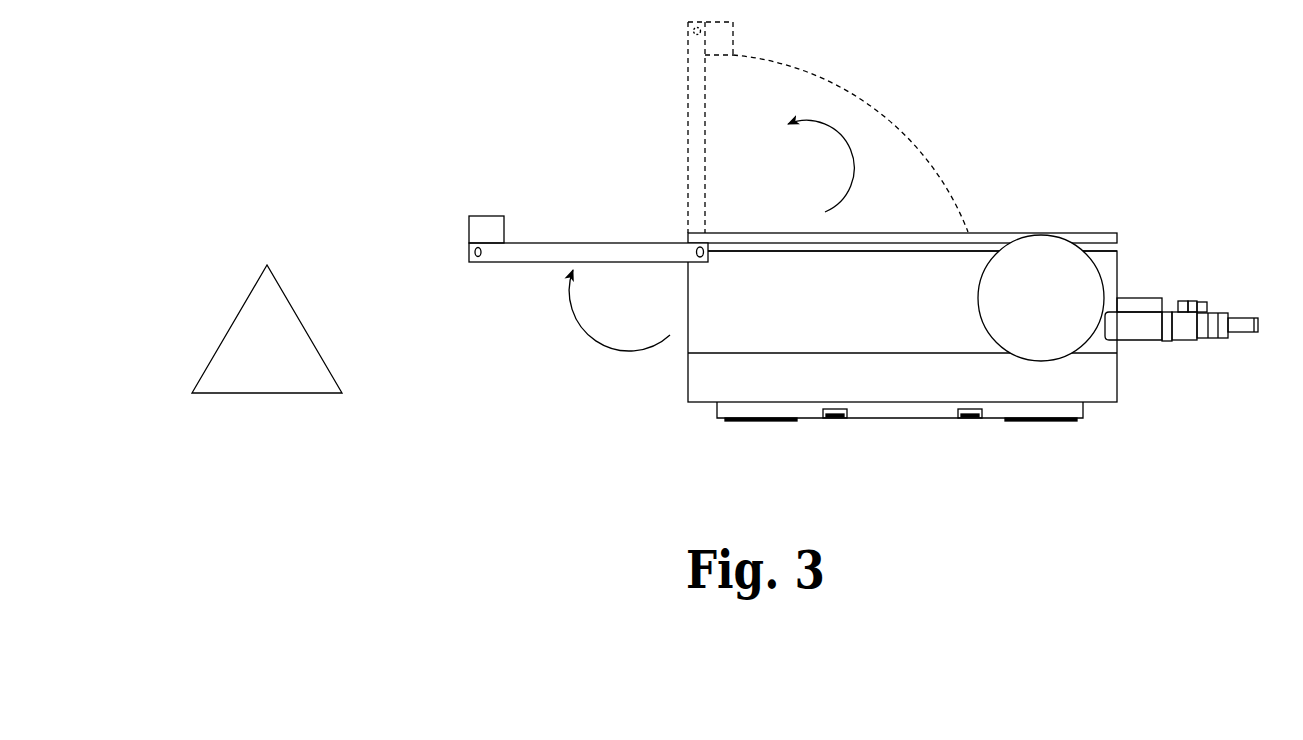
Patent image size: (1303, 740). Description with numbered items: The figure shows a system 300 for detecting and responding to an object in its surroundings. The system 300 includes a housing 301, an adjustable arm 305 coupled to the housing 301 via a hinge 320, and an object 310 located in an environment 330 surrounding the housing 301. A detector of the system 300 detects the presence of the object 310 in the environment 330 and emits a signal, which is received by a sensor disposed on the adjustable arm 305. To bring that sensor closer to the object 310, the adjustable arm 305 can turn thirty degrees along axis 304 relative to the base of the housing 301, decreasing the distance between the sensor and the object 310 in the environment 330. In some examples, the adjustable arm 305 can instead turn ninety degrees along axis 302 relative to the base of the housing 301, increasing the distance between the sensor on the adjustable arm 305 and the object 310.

The system 300 is at (420, 93).
The housing 301 is at (905, 233).
The axis 302 is at (855, 160).
The axis 304 is at (590, 338).
The adjustable arm 305 is at (596, 243).
The object 310 is at (248, 393).
The hinge 320 is at (700, 263).
The environment 330 is at (258, 167).